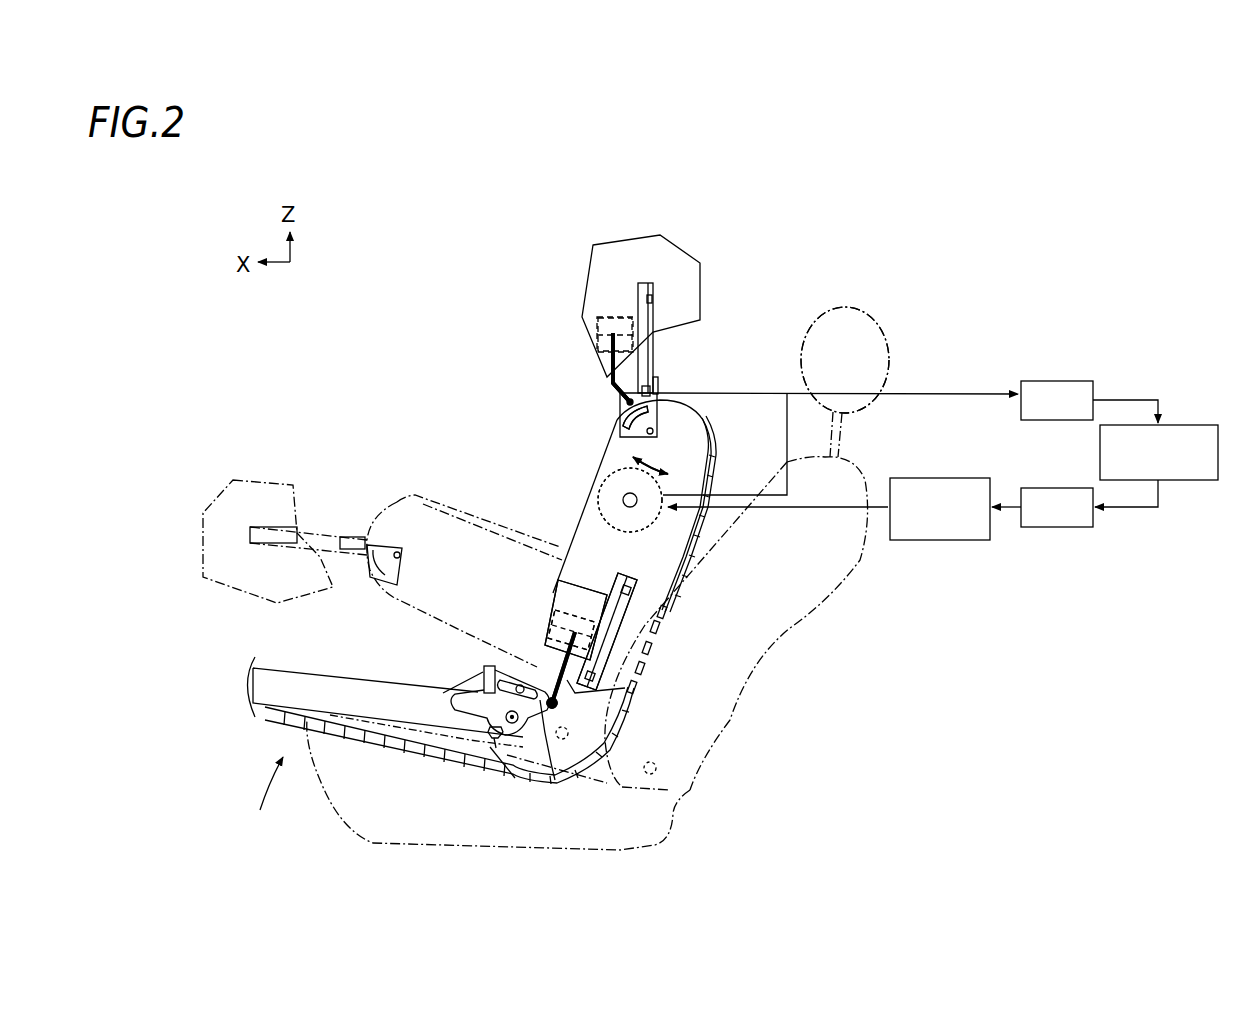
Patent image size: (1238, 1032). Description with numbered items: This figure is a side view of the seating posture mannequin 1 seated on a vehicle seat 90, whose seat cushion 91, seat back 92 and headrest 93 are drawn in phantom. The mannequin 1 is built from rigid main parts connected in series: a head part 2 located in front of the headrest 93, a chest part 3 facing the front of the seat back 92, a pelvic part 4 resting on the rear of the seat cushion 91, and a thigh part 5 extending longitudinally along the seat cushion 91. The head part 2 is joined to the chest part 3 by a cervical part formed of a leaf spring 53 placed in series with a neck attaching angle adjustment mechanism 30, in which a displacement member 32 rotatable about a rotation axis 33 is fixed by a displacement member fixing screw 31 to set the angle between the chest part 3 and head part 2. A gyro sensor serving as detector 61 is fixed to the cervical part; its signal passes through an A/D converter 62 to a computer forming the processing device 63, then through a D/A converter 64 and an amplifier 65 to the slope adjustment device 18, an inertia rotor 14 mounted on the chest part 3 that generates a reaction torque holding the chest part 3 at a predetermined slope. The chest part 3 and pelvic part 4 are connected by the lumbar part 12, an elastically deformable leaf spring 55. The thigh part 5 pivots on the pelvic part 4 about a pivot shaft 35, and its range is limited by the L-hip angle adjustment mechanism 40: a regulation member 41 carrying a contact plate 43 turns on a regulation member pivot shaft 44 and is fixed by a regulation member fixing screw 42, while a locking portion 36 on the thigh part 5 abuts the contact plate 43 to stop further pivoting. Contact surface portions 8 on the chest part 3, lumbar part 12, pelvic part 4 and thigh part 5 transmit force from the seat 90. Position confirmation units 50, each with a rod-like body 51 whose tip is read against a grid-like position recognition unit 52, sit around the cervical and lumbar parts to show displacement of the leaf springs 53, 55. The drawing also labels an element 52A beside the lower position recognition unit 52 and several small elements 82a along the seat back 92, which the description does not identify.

The seating posture mannequin 1 is at (263, 798).
The head part 2 is at (660, 266).
The chest part 3 is at (603, 458).
The pelvic part 4 is at (587, 762).
The thigh part 5 is at (311, 690).
The contact surface portion 8 is at (703, 523).
The lumbar part 12 is at (607, 631).
The inertia rotor 14 is at (598, 495).
The slope adjustment device 18 is at (630, 500).
The neck attaching angle adjustment mechanism 30 is at (668, 385).
The displacement member fixing screw 31 is at (625, 419).
The displacement member 32 is at (652, 419).
The rotation axis 33 is at (655, 433).
The pivot shaft 35 is at (512, 770).
The locking portion 36 is at (455, 707).
The L-hip angle adjustment mechanism 40 is at (482, 669).
The regulation member 41 is at (553, 713).
The regulation member fixing screw 42 is at (481, 670).
The contact plate 43 is at (482, 677).
The regulation member pivot shaft 44 is at (486, 740).
The position confirmation unit 50 is at (516, 322).
The rod-like body 51 is at (610, 386).
The position recognition unit 52 is at (597, 322).
The actuator body 52A is at (580, 595).
The leaf spring 53 is at (657, 356).
The leaf spring 55 is at (642, 649).
The detector 61 is at (610, 397).
The A/D converter 62 is at (1074, 381).
The processing device 63 is at (1188, 425).
The D/A converter 64 is at (1072, 527).
The amplifier 65 is at (962, 540).
The vibration sensor 82a is at (667, 612).
The vehicle seat 90 is at (882, 312).
The seat cushion 91 is at (676, 816).
The seat back 92 is at (765, 616).
The headrest 93 is at (848, 307).